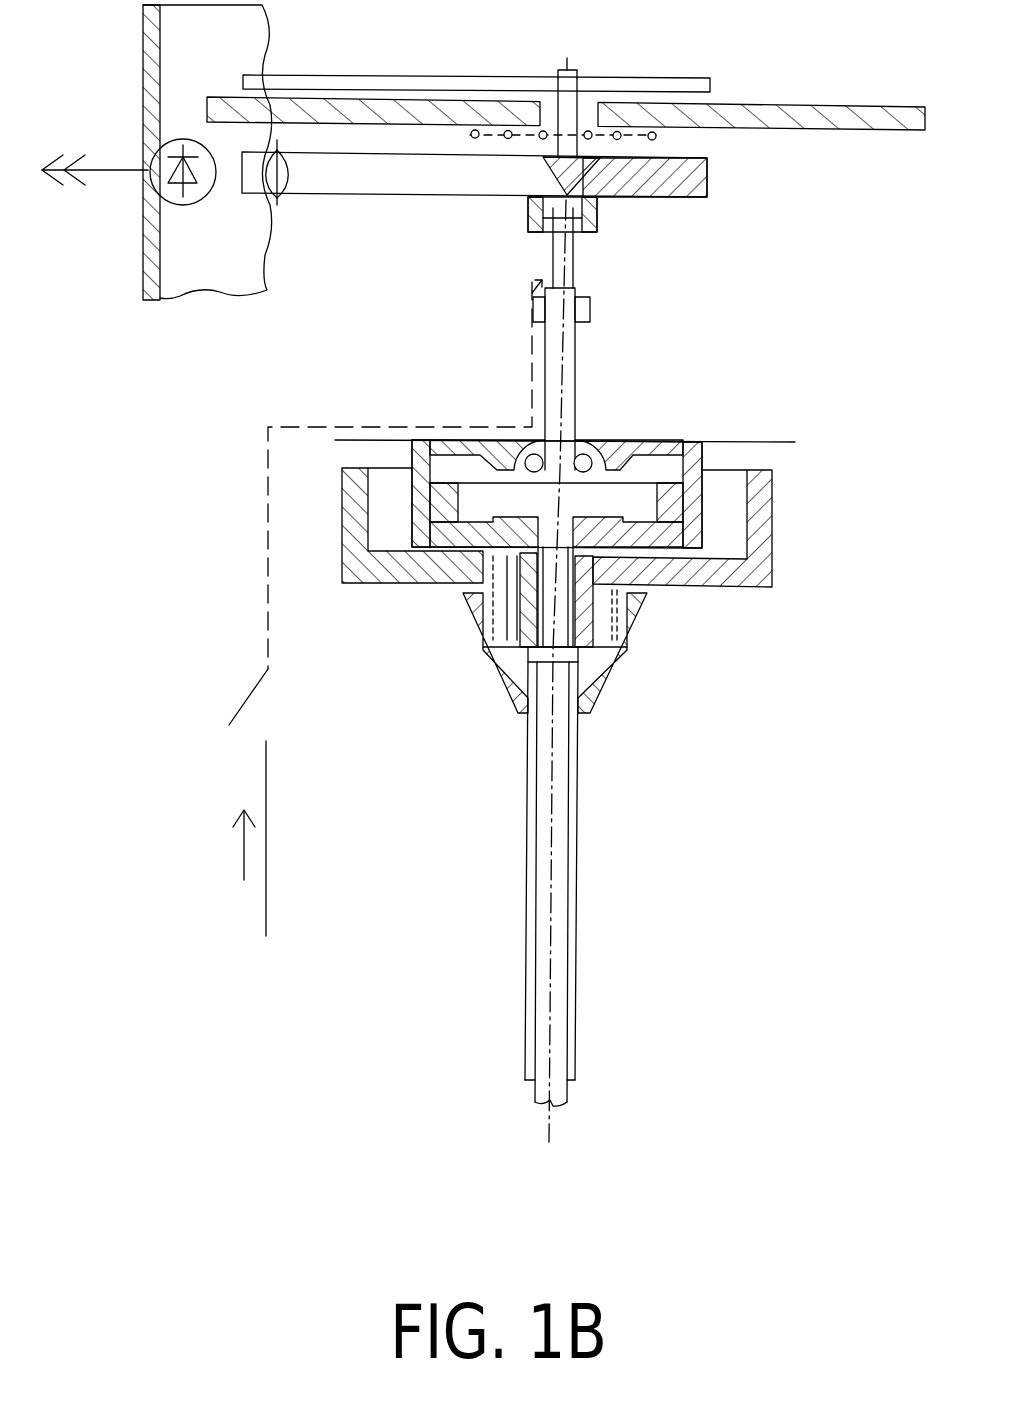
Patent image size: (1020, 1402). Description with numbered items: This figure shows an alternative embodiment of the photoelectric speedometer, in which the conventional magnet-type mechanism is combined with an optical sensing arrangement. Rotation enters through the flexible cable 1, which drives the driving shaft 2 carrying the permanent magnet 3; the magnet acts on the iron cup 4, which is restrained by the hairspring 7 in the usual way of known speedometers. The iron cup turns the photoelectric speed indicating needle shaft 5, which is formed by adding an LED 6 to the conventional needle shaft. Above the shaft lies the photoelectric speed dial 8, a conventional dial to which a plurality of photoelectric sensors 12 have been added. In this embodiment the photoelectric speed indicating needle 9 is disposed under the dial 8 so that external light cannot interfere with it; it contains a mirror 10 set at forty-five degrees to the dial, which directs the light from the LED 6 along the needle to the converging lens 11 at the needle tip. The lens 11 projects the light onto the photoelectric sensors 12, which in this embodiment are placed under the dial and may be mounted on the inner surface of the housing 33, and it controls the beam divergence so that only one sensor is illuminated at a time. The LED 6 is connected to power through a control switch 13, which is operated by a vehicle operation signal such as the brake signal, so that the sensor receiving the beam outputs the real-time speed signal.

The flexible cable 1 is at (578, 785).
The driving shaft 2 is at (563, 655).
The permanent magnet 3 is at (675, 512).
The iron cup 4 is at (700, 445).
The photoelectric speed indicating needle shaft 5 is at (563, 368).
The LED 6 is at (590, 312).
The hairspring 7 is at (660, 135).
The photoelectric speed dial 8 is at (762, 115).
The photoelectric speed indicating needle 9 is at (467, 85).
The mirror 10 is at (570, 167).
The converging lens 11 is at (280, 172).
The photoelectric sensors 12 is at (160, 200).
The control switch 13 is at (244, 704).
The housing 33 is at (140, 278).